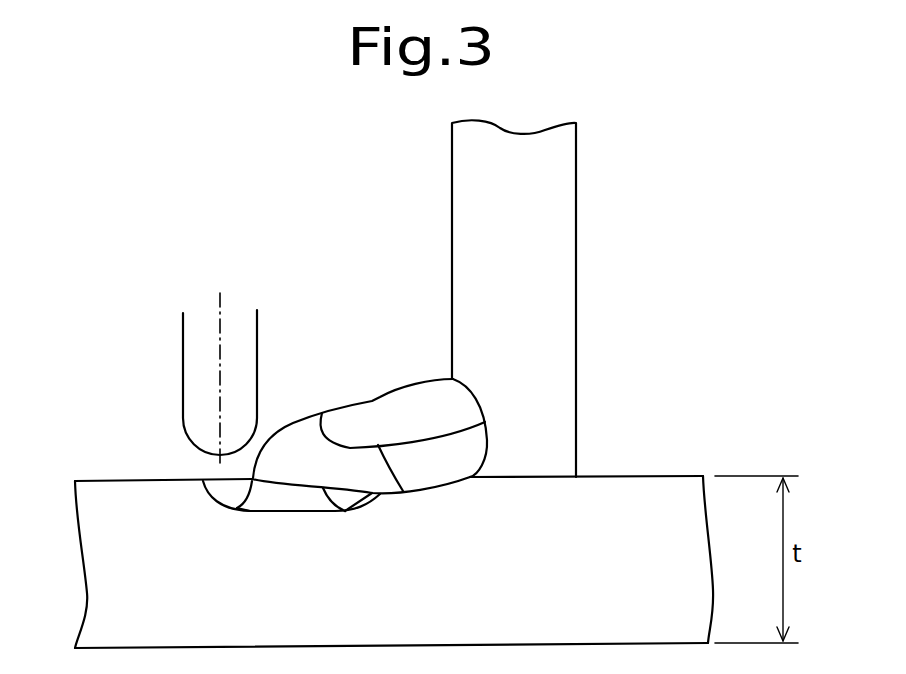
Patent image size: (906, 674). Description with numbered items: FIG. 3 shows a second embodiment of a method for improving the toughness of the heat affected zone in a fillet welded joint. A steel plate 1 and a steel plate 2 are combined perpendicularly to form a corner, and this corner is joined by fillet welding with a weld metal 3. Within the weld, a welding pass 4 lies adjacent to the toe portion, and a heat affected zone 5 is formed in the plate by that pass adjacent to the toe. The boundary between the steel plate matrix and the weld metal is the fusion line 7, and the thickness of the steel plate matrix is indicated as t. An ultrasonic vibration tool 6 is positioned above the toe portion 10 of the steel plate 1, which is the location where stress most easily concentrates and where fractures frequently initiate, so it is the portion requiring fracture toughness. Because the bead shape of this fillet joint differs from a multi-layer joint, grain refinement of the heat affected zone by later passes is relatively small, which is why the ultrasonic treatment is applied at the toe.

The steel plate 1 is at (143, 498).
The steel plate 2 is at (468, 207).
The weld metal 3 is at (365, 398).
The welding pass adjacent to the toe portion 4 is at (292, 478).
The heat affected zone 5 is at (270, 498).
The ultrasonic vibration tool 6 is at (200, 362).
The fusion line 7 is at (337, 515).
The toe portion 10 is at (237, 507).